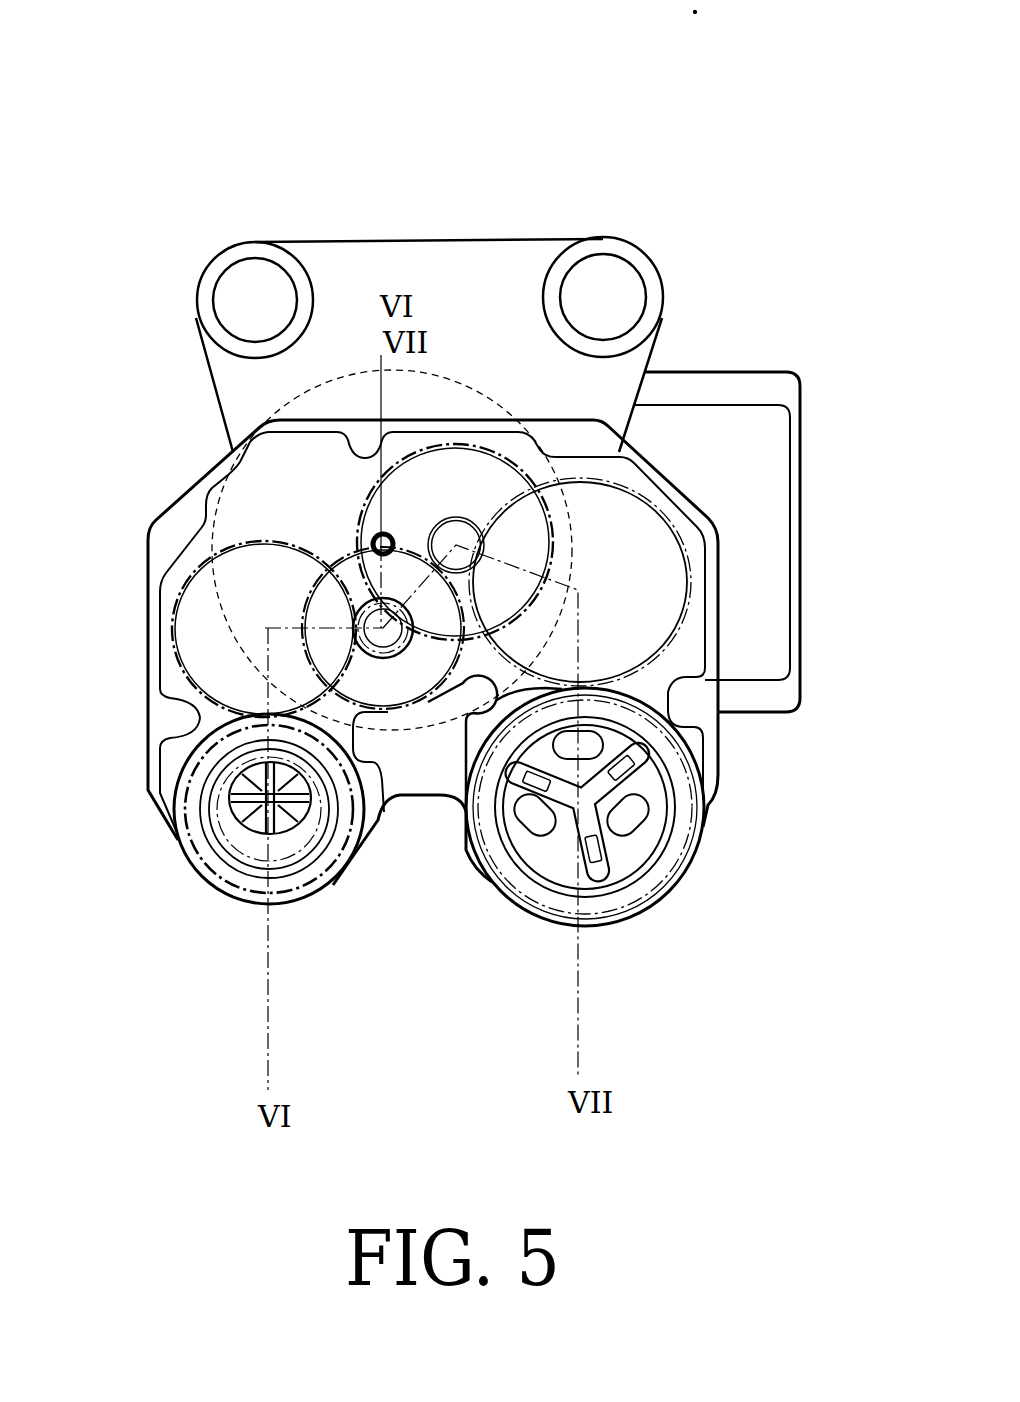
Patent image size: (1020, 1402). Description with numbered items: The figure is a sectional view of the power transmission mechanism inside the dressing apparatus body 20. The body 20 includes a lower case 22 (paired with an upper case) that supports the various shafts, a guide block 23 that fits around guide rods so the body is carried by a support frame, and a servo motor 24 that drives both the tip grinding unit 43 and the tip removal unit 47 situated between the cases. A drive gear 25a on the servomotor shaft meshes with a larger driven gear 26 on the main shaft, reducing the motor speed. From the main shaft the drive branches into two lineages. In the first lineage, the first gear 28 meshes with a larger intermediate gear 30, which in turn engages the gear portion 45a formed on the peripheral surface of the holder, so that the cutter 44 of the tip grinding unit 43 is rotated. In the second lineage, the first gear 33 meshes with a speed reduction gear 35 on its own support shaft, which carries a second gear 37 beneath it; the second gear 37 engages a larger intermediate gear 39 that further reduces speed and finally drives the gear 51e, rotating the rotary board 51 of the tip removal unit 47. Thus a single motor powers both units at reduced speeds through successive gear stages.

The dressing apparatus body 20 is at (388, 180).
The lower case 22 is at (175, 717).
The guide block 23 is at (453, 283).
The servo motor 24 is at (372, 378).
The drive gear 25a is at (370, 533).
The driven gear 26 is at (352, 573).
The first gear of the first driving lineage 28 is at (390, 656).
The intermediate gear 30 is at (195, 637).
The first gear of the second driving lineage 33 is at (410, 650).
The speed reduction gear 35 is at (472, 475).
The second gear 37 is at (462, 538).
The intermediate gear 39 is at (650, 560).
The tip grinding unit 43 is at (279, 906).
The cutter 44 is at (268, 800).
The gear portion 45a is at (181, 822).
The tip removal unit 47 is at (598, 933).
The rotary board 51 is at (532, 883).
The gear 51e is at (700, 775).